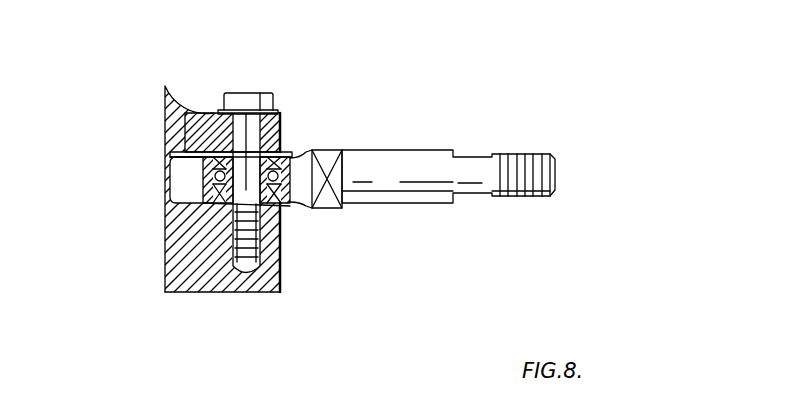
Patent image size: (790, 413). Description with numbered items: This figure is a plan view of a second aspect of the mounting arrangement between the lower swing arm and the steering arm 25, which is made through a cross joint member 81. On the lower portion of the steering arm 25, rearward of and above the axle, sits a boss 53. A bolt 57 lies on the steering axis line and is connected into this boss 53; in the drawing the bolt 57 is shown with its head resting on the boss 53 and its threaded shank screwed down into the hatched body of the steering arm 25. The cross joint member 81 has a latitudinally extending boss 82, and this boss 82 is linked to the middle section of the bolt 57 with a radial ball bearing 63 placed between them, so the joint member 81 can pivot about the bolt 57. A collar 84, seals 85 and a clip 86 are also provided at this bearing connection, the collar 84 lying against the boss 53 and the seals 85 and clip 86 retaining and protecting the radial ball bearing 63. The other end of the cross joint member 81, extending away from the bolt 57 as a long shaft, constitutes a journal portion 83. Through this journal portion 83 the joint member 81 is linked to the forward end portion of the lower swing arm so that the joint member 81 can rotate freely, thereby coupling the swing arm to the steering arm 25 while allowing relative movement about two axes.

The steering arm 25 is at (173, 261).
The boss 53 is at (283, 118).
The bolt 57 is at (247, 125).
The radial ball bearing 63 is at (291, 201).
The cross joint member 81 is at (422, 149).
The boss 82 is at (171, 180).
The journal portion 83 is at (418, 184).
The collar 84 is at (283, 155).
The seals 85 is at (218, 157).
The clip 86 is at (172, 156).